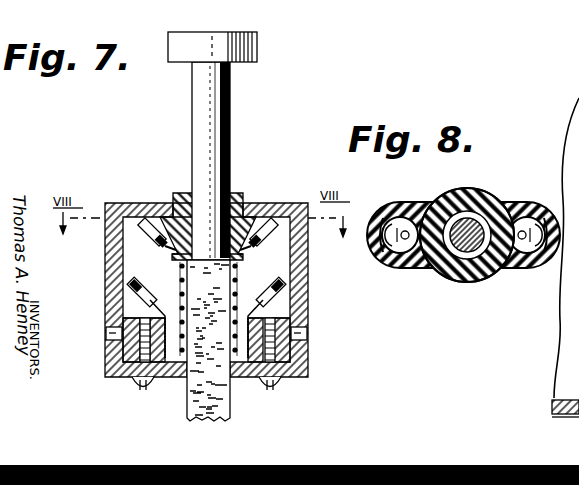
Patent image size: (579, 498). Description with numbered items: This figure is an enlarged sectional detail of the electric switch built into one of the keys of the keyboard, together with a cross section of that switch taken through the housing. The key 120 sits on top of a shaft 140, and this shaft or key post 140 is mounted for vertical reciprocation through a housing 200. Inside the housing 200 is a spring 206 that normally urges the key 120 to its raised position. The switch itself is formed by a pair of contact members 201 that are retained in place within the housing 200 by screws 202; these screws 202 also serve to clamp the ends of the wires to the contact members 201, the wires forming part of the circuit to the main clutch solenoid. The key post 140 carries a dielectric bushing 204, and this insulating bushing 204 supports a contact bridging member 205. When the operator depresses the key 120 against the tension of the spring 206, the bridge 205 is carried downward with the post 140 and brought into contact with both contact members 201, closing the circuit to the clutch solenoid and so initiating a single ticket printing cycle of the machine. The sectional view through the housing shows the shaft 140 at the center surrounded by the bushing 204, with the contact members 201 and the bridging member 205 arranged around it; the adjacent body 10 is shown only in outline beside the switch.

In FIG. 8, the control device body 10 is at (550, 331).
In FIG. 7, the key 120 is at (257, 37).
In FIG. 7, the shaft 140 is at (232, 95).
In FIG. 8, the shaft 140 is at (463, 228).
In FIG. 7, the housing 200 is at (308, 281).
In FIG. 8, the housing 200 is at (503, 202).
In FIG. 7, the contact member 201 is at (128, 290).
In FIG. 8, the contact member 201 is at (397, 268).
In FIG. 7, the screw 202 is at (133, 387).
In FIG. 7, the dielectric bushing 204 is at (238, 197).
In FIG. 8, the dielectric bushing 204 is at (450, 277).
In FIG. 7, the contact bridging member 205 is at (143, 232).
In FIG. 8, the contact bridging member 205 is at (420, 210).
In FIG. 7, the spring 206 is at (181, 348).